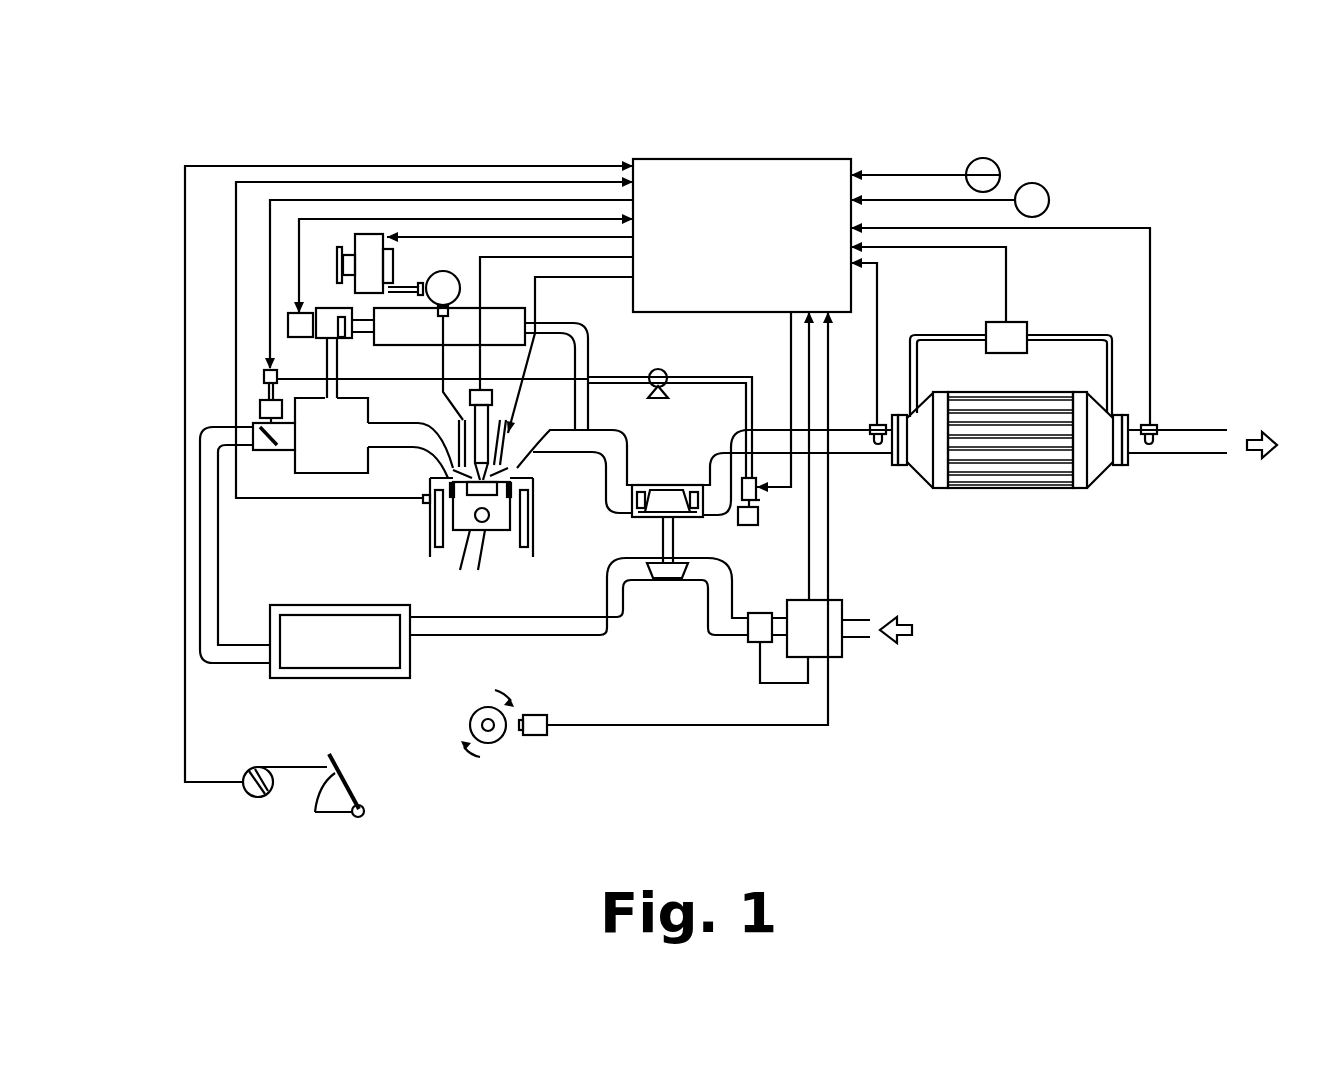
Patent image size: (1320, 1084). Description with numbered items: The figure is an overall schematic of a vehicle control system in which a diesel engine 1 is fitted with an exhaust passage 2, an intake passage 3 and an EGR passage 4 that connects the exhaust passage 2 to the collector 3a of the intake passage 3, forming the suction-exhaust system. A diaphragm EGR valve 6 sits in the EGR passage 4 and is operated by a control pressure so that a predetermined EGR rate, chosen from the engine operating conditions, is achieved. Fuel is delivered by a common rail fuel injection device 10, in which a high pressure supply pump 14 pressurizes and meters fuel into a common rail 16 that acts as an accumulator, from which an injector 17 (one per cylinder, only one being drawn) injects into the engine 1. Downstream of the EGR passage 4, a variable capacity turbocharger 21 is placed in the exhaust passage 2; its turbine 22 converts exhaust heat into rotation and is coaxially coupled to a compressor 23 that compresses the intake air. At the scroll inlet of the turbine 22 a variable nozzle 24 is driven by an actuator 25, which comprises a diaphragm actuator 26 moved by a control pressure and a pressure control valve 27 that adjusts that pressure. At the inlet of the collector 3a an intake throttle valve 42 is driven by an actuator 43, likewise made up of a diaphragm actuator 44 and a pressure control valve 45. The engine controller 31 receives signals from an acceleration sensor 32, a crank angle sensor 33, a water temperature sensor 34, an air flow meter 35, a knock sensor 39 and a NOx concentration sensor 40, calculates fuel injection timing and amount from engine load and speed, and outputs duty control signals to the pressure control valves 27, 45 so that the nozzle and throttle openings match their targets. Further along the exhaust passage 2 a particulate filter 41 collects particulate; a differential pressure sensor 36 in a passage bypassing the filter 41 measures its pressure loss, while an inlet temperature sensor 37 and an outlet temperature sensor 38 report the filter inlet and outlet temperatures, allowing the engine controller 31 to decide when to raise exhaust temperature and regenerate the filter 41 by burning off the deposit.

The engine 1 is at (538, 560).
The exhaust passage 2 is at (628, 452).
The intake passage 3 is at (393, 430).
The collector 3a is at (350, 410).
The EGR passage 4 is at (590, 356).
The diaphragm EGR valve 6 is at (300, 350).
The common rail fuel injection device 10 is at (415, 266).
The high pressure supply pump 14 is at (367, 245).
The common rail 16 is at (448, 284).
The injector 17 is at (492, 398).
The variable capacity turbocharger 21 is at (681, 582).
The turbine 22 is at (658, 500).
The compressor 23 is at (665, 580).
The variable nozzle 24 is at (632, 513).
The actuator 25 is at (762, 500).
The diaphragm actuator 26 is at (745, 525).
The pressure control valve 27 is at (758, 489).
The engine controller 31 is at (797, 180).
The acceleration sensor 32 is at (243, 792).
The crank angle sensor 33 is at (533, 736).
The water temperature sensor 34 is at (423, 503).
The air flow meter 35 is at (758, 632).
The differential pressure sensor 36 is at (1010, 335).
The inlet temperature sensor 37 is at (870, 422).
The outlet temperature sensor 38 is at (1157, 425).
The knock sensor 39 is at (985, 172).
The NOx concentration sensor 40 is at (1033, 200).
The particulate filter 41 is at (1040, 473).
The intake throttle valve 42 is at (253, 434).
The actuator 43 is at (255, 393).
The diaphragm actuator 44 is at (258, 407).
The pressure control valve 45 is at (263, 374).